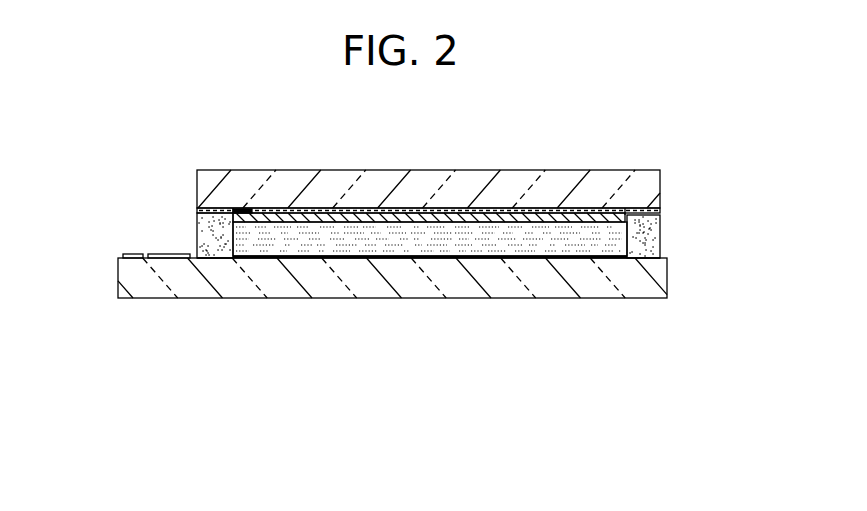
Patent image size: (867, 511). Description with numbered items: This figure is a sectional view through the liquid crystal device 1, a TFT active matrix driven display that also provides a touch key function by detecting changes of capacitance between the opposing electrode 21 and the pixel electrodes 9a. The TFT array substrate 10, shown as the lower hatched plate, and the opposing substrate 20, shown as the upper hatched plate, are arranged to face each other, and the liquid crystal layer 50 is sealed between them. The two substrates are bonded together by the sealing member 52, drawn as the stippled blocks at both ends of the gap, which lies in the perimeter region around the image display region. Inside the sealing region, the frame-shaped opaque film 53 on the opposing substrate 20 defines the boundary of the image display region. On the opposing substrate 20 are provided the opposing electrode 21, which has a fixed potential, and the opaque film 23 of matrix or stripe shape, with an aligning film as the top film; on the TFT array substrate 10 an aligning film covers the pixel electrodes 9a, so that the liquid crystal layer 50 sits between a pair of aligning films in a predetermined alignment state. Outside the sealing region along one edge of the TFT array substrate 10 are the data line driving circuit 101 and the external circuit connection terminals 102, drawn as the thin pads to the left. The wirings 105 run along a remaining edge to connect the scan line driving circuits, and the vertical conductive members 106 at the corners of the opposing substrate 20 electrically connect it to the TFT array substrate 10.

The liquid crystal device 1 is at (500, 111).
The opposing substrate 20 is at (343, 182).
The opposing electrode 21 is at (553, 211).
The opaque film 23 is at (417, 208).
The liquid crystal layer 50 is at (373, 240).
The pixel electrodes 9a is at (281, 260).
The sealing member 52 is at (208, 228).
The frame-shaped opaque film 53 is at (236, 209).
The TFT array substrate 10 is at (457, 290).
The data line driving circuit 101 is at (172, 253).
The external circuit connection terminals 102 is at (132, 254).
The vertical conductive members 106 is at (212, 262).
The wirings 105 is at (612, 262).